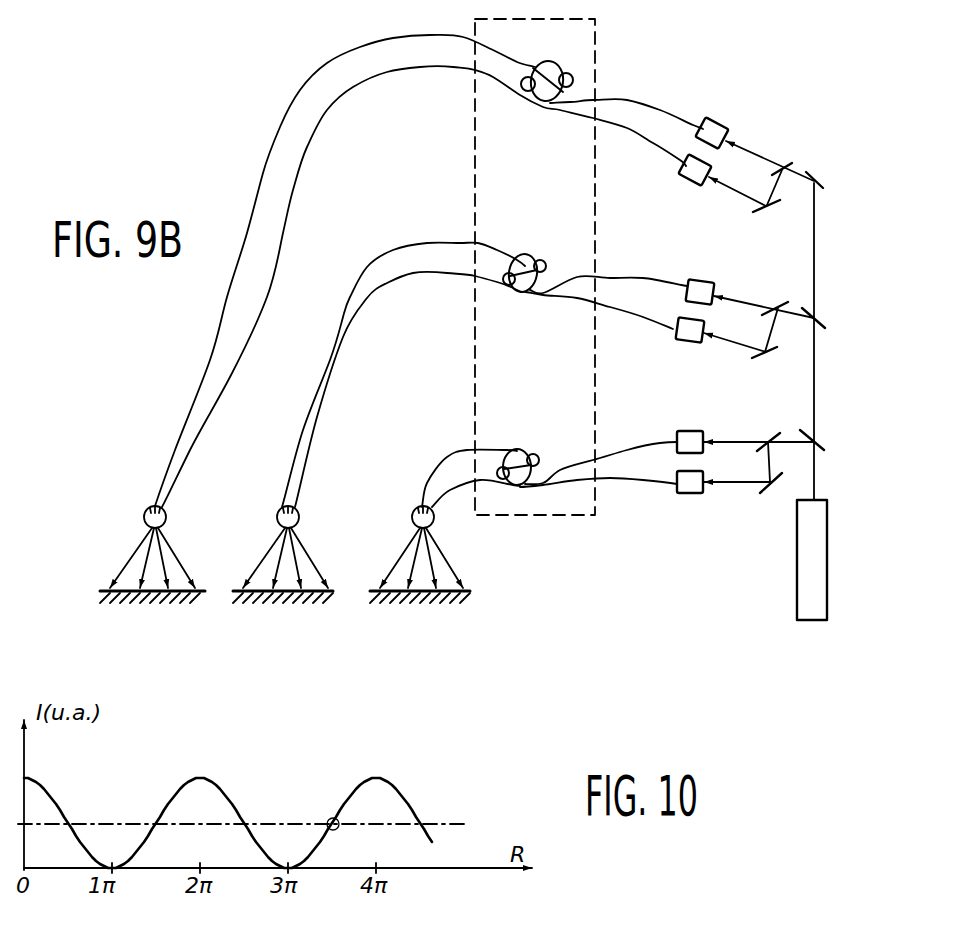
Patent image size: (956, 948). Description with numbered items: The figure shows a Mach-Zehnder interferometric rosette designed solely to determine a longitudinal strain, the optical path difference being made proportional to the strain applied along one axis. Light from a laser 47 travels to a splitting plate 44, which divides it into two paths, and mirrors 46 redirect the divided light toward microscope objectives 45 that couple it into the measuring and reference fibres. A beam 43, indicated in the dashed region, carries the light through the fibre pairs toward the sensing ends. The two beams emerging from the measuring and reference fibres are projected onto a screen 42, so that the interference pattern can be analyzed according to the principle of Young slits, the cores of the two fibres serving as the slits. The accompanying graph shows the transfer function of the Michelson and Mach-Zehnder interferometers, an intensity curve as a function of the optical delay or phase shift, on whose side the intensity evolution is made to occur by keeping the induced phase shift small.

The screen 42 is at (103, 589).
The beam 43 is at (598, 42).
The splitting plate 44 is at (790, 163).
The microscope objective 45 is at (727, 122).
The mirror 46 is at (762, 211).
The laser 47 is at (800, 583).